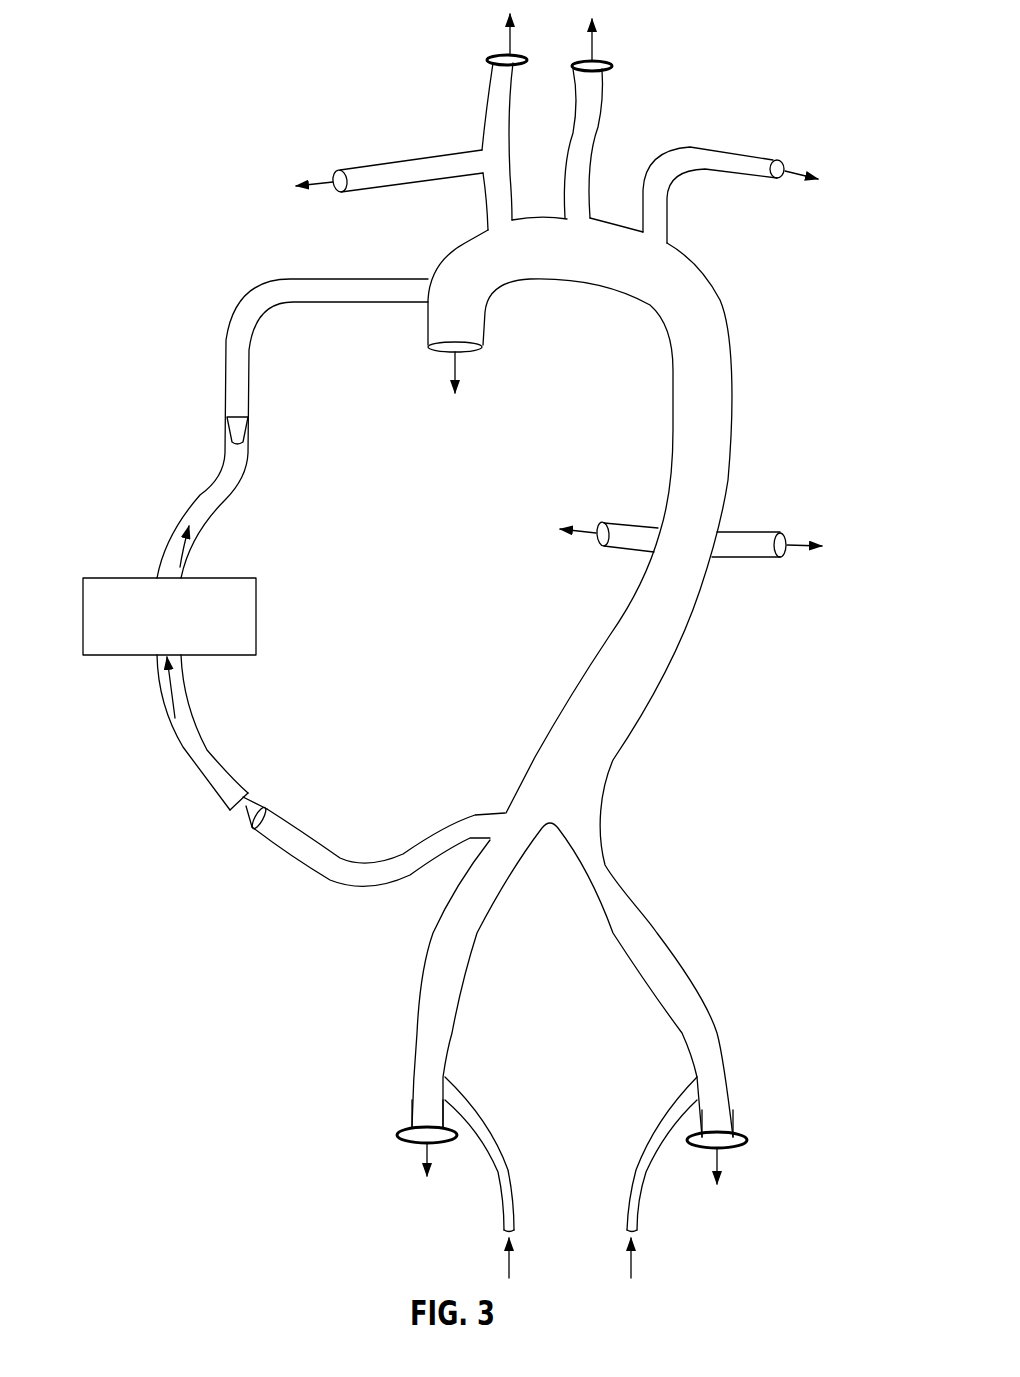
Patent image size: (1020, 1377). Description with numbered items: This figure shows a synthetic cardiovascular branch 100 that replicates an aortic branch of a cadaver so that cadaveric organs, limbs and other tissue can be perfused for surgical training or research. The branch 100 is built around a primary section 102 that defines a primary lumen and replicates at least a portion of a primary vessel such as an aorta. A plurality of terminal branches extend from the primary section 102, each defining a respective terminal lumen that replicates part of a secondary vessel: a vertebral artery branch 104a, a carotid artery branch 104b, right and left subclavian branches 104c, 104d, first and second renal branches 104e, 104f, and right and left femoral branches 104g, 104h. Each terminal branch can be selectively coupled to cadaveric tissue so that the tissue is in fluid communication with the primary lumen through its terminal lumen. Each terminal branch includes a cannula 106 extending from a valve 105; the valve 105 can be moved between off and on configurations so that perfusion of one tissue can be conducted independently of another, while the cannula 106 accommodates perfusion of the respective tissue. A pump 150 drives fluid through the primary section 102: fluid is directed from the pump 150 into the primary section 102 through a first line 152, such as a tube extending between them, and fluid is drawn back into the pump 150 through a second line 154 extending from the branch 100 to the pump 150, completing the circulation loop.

The synthetic cardiovascular branch 100 is at (781, 61).
The primary section 102 is at (735, 413).
The vertebral artery branch 104a is at (487, 113).
The carotid artery branch 104b is at (603, 112).
The right subclavian branch 104c is at (408, 157).
The left subclavian branch 104d is at (740, 178).
The first renal branch 104e is at (626, 524).
The second renal branch 104f is at (753, 531).
The right femoral branch 104g is at (418, 1035).
The left femoral branch 104h is at (731, 1087).
The valve 105 is at (612, 68).
The cannula 106 is at (596, 42).
The pump 150 is at (257, 614).
The first line 152 is at (250, 462).
The second line 154 is at (368, 863).